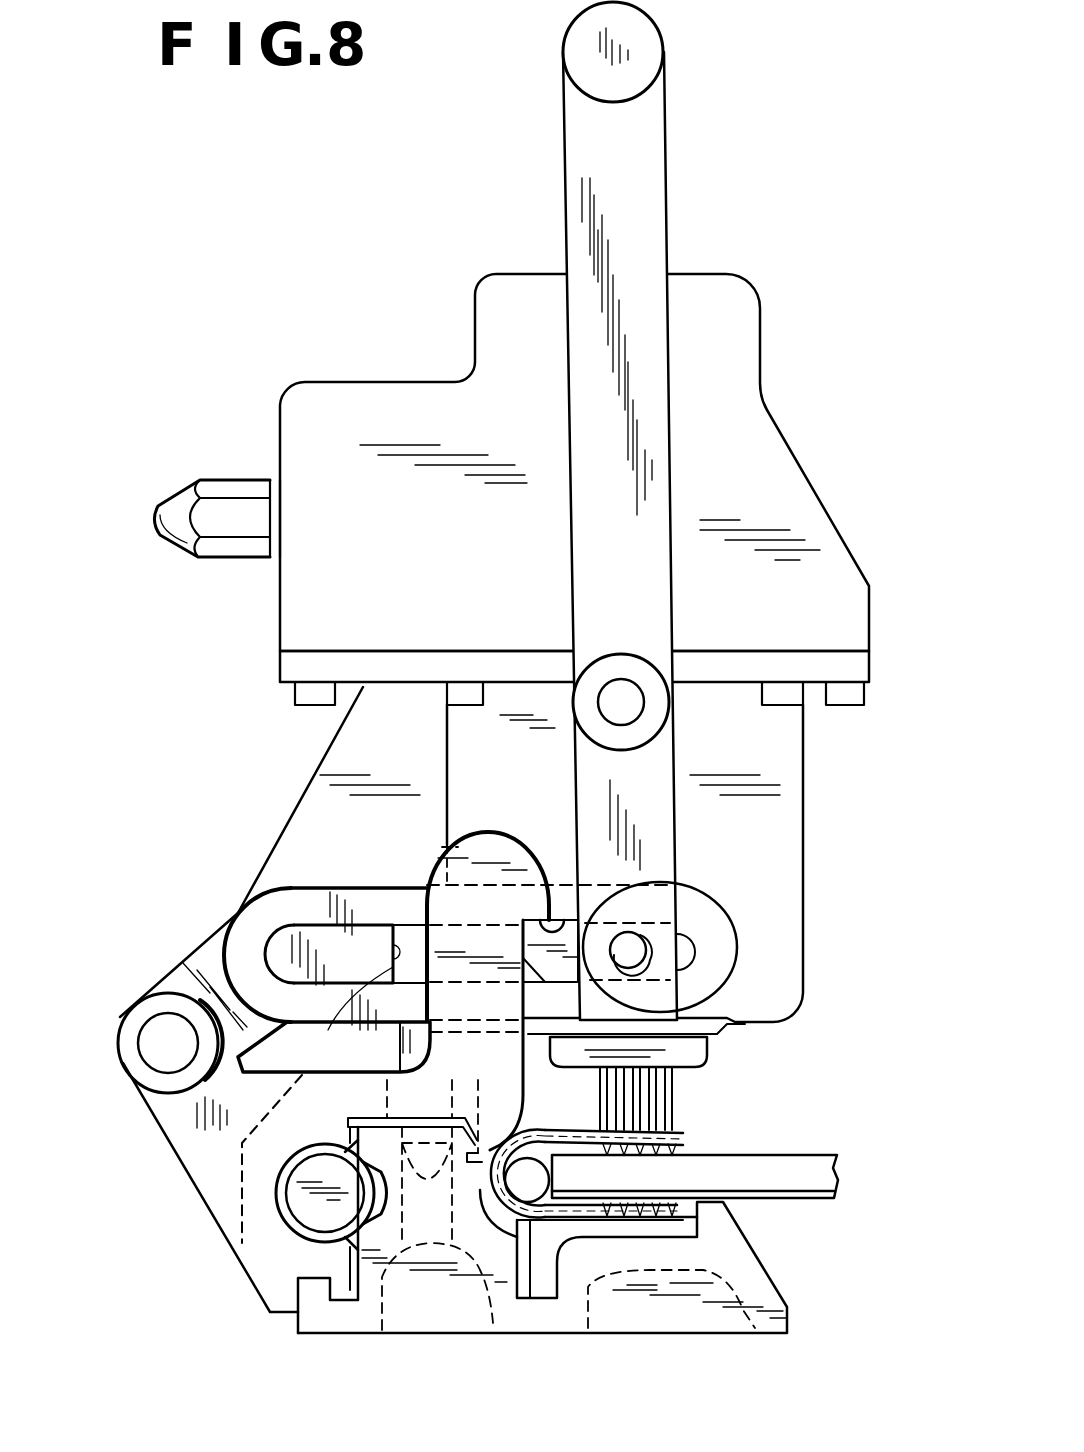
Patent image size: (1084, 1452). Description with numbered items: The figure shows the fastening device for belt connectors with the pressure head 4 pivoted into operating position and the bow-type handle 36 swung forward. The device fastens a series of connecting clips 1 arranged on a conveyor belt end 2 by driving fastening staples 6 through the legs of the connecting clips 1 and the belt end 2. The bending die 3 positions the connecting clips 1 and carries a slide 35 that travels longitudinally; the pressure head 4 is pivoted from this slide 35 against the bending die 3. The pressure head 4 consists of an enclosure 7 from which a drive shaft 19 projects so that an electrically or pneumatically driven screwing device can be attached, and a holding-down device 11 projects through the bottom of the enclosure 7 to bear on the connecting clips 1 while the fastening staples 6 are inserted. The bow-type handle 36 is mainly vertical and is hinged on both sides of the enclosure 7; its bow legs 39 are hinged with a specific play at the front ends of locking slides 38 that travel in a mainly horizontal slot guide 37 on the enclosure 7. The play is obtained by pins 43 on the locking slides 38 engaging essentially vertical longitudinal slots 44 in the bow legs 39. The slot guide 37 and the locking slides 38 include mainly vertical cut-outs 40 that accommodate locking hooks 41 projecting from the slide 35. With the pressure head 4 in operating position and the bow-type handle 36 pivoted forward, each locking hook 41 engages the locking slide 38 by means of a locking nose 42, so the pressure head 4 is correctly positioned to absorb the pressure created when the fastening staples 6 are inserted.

The connecting clips 1 is at (533, 1135).
The conveyor belt end 2 is at (795, 1168).
The bending die 3 is at (800, 1265).
The pressure head 4 is at (574, 755).
The fastening staples 6 is at (670, 1100).
The enclosure 7 is at (746, 409).
The holding-down device 11 is at (700, 1053).
The drive shaft 19 is at (226, 488).
The slide 35 is at (208, 1145).
The bow-type handle 36 is at (690, 128).
The slot guide 37 is at (267, 937).
The locking slides 38 is at (330, 943).
The bow legs 39 is at (648, 220).
The cut-outs 40 is at (397, 1037).
The locking hooks 41 is at (468, 853).
The locking nose 42 is at (563, 920).
The pins 43 is at (628, 953).
The longitudinal slots 44 is at (650, 980).